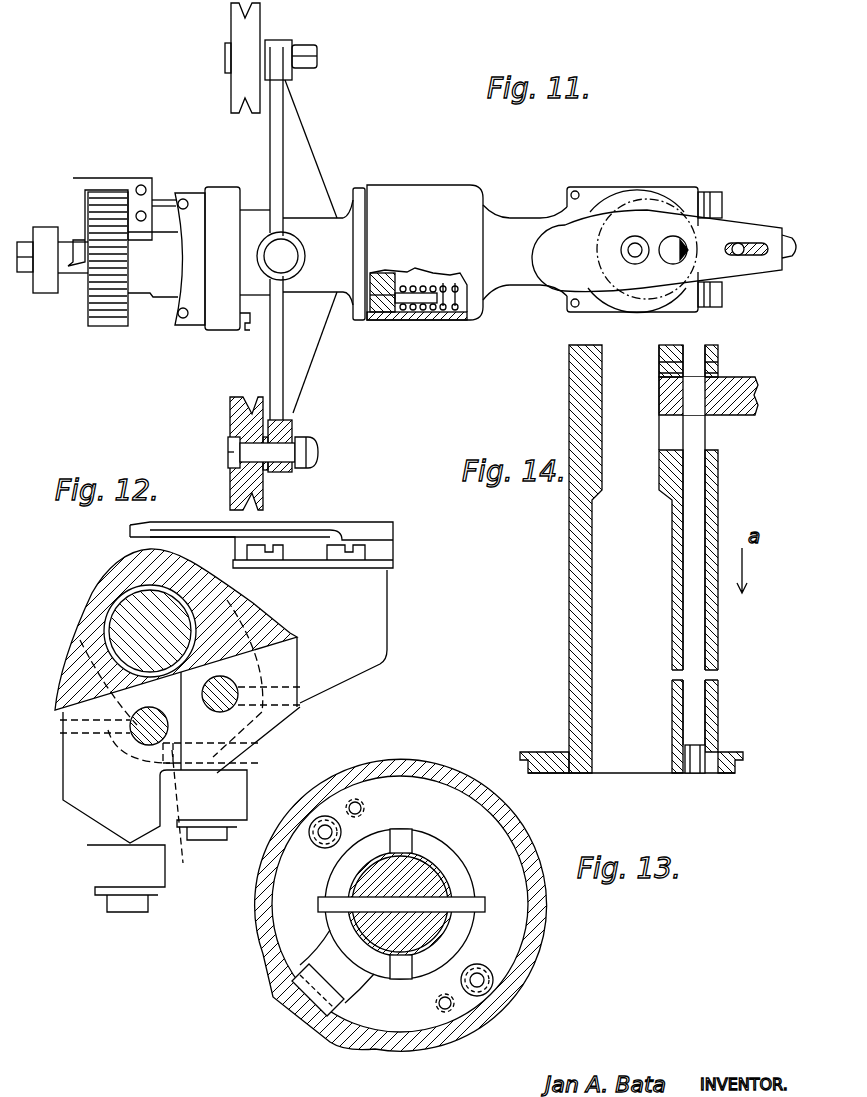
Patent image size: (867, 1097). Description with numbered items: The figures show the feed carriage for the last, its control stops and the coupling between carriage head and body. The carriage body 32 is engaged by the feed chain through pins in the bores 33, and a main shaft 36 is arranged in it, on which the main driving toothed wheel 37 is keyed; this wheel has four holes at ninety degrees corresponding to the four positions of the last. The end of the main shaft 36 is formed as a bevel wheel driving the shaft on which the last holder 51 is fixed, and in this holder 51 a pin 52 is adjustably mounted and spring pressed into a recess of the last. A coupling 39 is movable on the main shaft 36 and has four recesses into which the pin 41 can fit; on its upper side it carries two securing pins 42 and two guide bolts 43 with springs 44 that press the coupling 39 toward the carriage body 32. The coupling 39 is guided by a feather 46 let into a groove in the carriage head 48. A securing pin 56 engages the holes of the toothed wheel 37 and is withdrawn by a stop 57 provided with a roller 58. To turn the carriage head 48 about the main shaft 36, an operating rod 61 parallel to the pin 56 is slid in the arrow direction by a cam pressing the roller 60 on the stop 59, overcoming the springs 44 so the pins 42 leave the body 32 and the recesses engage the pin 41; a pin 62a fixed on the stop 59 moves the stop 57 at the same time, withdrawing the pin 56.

In FIG. 11, the carriage body 32 is at (306, 163).
In FIG. 12, the carriage body 32 is at (100, 580).
In FIG. 14, the carriage body 32 is at (578, 548).
In FIG. 11, the bores 33 is at (183, 319).
In FIG. 12, the main shaft 36 is at (140, 628).
In FIG. 13, the main shaft 36 is at (432, 930).
In FIG. 11, the main driving toothed wheel 37 is at (105, 316).
In FIG. 11, the coupling 39 is at (382, 320).
In FIG. 13, the coupling 39 is at (357, 984).
In FIG. 13, the pin 41 is at (478, 903).
In FIG. 13, the securing pins 42 is at (346, 806).
In FIG. 11, the guide bolts 43 is at (431, 304).
In FIG. 13, the guide bolts 43 is at (478, 992).
In FIG. 11, the springs 44 is at (459, 319).
In FIG. 13, the springs 44 is at (480, 973).
In FIG. 13, the feather 46 is at (306, 997).
In FIG. 13, the carriage head 48 is at (503, 998).
In FIG. 11, the last holder 51 is at (553, 266).
In FIG. 11, the pin 52 is at (683, 253).
In FIG. 12, the securing pin 56 is at (133, 740).
In FIG. 12, the stop 57 is at (78, 782).
In FIG. 12, the roller 58 is at (98, 863).
In FIG. 12, the stop 59 is at (287, 665).
In FIG. 14, the stop 59 is at (737, 385).
In FIG. 12, the roller 60 is at (237, 785).
In FIG. 12, the operating rod 61 is at (237, 708).
In FIG. 14, the operating rod 61 is at (698, 437).
In FIG. 12, the pin 62a is at (196, 818).